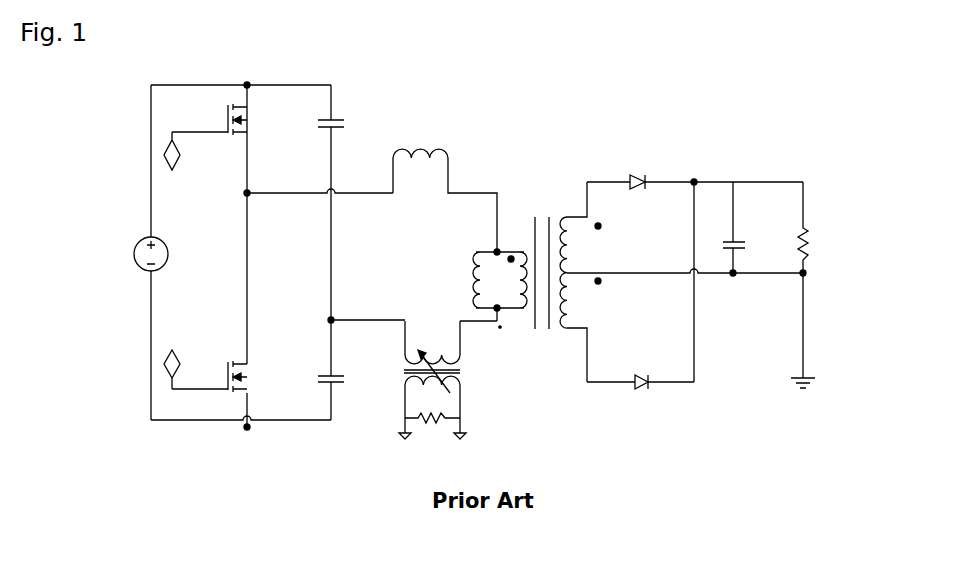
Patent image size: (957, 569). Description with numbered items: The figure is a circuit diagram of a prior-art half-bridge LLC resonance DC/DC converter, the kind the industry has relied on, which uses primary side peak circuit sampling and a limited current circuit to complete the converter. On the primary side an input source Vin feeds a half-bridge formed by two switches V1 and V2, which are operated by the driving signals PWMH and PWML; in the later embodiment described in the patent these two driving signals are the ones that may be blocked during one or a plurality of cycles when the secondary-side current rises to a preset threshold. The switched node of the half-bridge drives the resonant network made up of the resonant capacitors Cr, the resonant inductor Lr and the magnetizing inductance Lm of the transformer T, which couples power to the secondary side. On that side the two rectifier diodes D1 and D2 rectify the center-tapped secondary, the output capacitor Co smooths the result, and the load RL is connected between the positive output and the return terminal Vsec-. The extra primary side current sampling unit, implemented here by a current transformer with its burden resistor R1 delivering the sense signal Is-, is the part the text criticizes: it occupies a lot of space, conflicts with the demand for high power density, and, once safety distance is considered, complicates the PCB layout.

The input voltage source Vin is at (137, 254).
The high-side switch (MOSFET) V1 is at (209, 119).
The low-side switch (MOSFET) V2 is at (209, 292).
The driving signal PWMH is at (189, 164).
The driving signal PWML is at (194, 358).
The resonant capacitor Cr is at (340, 252).
The resonant inductor Lr is at (445, 200).
The magnetizing inductance Lm is at (500, 288).
The transformer T is at (669, 282).
The rectifier diode D1 is at (640, 193).
The rectifier diode D2 is at (640, 393).
The output capacitor Co is at (721, 229).
The load resistor RL is at (793, 285).
The negative secondary output Vsec- is at (773, 306).
The current sense resistor R1 is at (432, 385).
The current sense negative output Is- is at (408, 463).